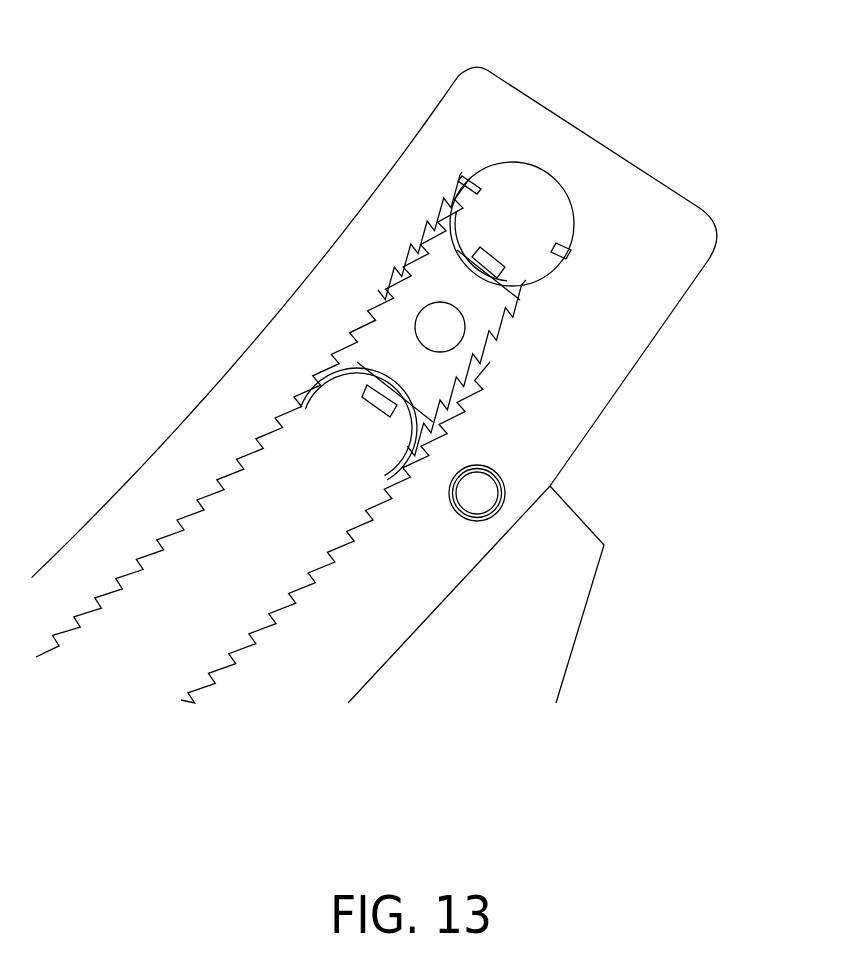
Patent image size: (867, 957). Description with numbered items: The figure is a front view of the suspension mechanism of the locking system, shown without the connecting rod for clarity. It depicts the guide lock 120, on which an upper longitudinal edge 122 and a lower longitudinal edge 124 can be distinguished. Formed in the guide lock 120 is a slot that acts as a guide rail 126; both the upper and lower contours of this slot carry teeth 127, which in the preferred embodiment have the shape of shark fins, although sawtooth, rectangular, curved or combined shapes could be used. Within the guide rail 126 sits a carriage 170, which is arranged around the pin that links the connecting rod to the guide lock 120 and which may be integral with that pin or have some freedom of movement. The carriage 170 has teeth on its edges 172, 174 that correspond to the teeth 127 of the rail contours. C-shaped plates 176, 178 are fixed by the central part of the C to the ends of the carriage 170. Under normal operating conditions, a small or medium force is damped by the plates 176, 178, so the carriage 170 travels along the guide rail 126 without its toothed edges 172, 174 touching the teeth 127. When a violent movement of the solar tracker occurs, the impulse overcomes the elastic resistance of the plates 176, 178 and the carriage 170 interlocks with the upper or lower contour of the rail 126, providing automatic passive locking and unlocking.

The guide lock 120 is at (104, 507).
The upper longitudinal edge 122 is at (427, 120).
The lower longitudinal edge 124 is at (700, 273).
The guide rail 126 is at (219, 588).
The teeth 127 is at (288, 592).
The carriage 170 is at (520, 301).
The toothed edge of carriage 172 is at (397, 287).
The toothed edge of carriage 174 is at (485, 348).
The C-shaped plate 176 is at (333, 377).
The C-shaped plate 178 is at (453, 230).